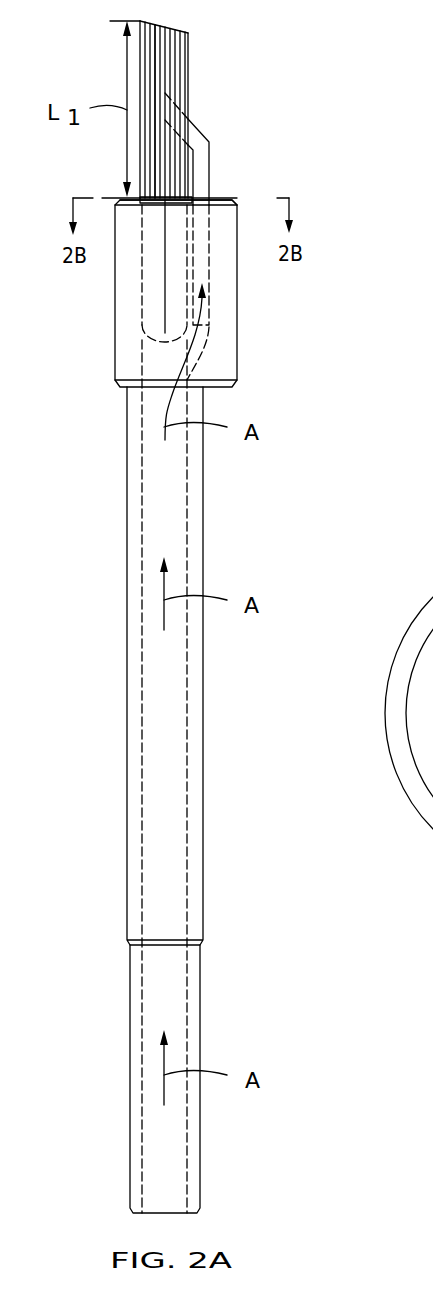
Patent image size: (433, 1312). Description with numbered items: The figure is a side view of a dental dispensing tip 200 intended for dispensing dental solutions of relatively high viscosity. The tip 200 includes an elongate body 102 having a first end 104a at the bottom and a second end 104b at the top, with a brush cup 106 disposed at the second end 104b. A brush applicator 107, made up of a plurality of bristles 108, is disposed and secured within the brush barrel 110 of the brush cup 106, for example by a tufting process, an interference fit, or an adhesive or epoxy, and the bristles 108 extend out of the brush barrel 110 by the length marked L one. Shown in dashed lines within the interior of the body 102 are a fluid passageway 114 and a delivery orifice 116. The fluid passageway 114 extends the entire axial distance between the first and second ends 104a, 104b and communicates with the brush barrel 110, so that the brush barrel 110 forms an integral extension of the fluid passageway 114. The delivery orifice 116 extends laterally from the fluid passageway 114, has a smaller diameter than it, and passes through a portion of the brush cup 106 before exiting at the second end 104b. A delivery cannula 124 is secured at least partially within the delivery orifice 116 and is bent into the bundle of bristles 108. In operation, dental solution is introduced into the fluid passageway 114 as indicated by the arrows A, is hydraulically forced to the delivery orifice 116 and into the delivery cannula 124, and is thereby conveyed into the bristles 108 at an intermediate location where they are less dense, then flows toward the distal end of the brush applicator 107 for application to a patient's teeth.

The dental dispensing tip 200 is at (338, 248).
The body 102 is at (197, 700).
The first end 104a is at (218, 1178).
The second end 104b is at (250, 207).
The brush cup 106 is at (225, 353).
The brush applicator 107 is at (205, 49).
The bristles 108 is at (152, 57).
The brush barrel 110 is at (140, 285).
The fluid passageway 114 is at (187, 870).
The delivery orifice 116 is at (210, 253).
The delivery cannula 124 is at (197, 140).